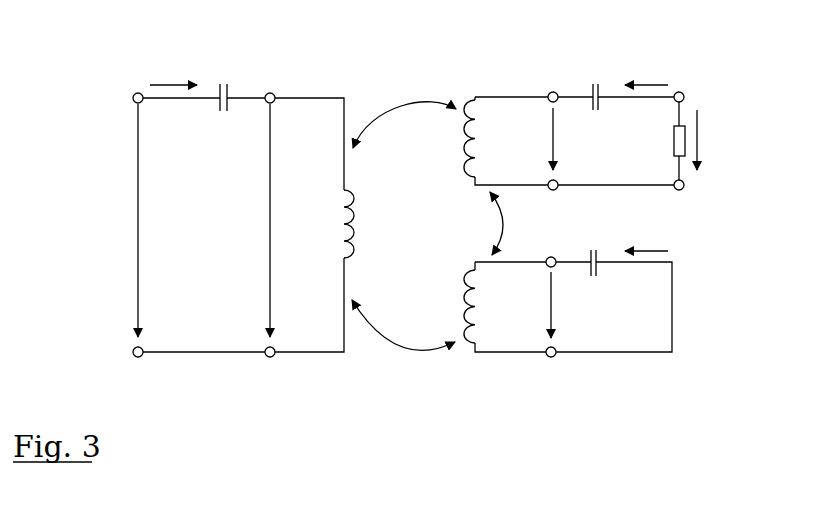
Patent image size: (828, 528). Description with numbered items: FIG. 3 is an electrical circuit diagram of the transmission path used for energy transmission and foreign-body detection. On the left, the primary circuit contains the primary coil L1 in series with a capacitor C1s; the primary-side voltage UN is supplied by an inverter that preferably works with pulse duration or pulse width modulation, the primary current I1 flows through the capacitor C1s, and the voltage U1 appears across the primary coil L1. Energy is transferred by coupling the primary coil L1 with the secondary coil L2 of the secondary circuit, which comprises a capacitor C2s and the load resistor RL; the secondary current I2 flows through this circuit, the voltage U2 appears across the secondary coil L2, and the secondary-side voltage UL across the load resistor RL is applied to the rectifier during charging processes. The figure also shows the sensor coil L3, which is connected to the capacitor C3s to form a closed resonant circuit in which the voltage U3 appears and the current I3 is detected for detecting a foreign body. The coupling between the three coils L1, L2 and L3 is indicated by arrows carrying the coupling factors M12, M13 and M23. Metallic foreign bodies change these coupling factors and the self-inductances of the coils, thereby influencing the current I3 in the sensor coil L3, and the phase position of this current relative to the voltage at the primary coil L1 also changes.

The capacitor C1s is at (227, 83).
The primary coil L1 is at (334, 224).
The primary current I1 is at (173, 67).
The voltage on the primary side UN is at (119, 228).
The primary coil voltage U1 is at (253, 230).
The capacitor C2s is at (598, 83).
The secondary coil L2 is at (483, 138).
The load resistor RL is at (664, 141).
The secondary coil voltage U2 is at (586, 153).
The voltage on the secondary side UL is at (724, 153).
The secondary current I2 is at (646, 67).
The capacitor C3s is at (597, 249).
The sensor coil L3 is at (484, 306).
The tertiary coil voltage U3 is at (584, 320).
The current I3 is at (646, 237).
The coupling factor M12 is at (404, 128).
The coupling factor M23 is at (470, 223).
The coupling factor M13 is at (403, 325).